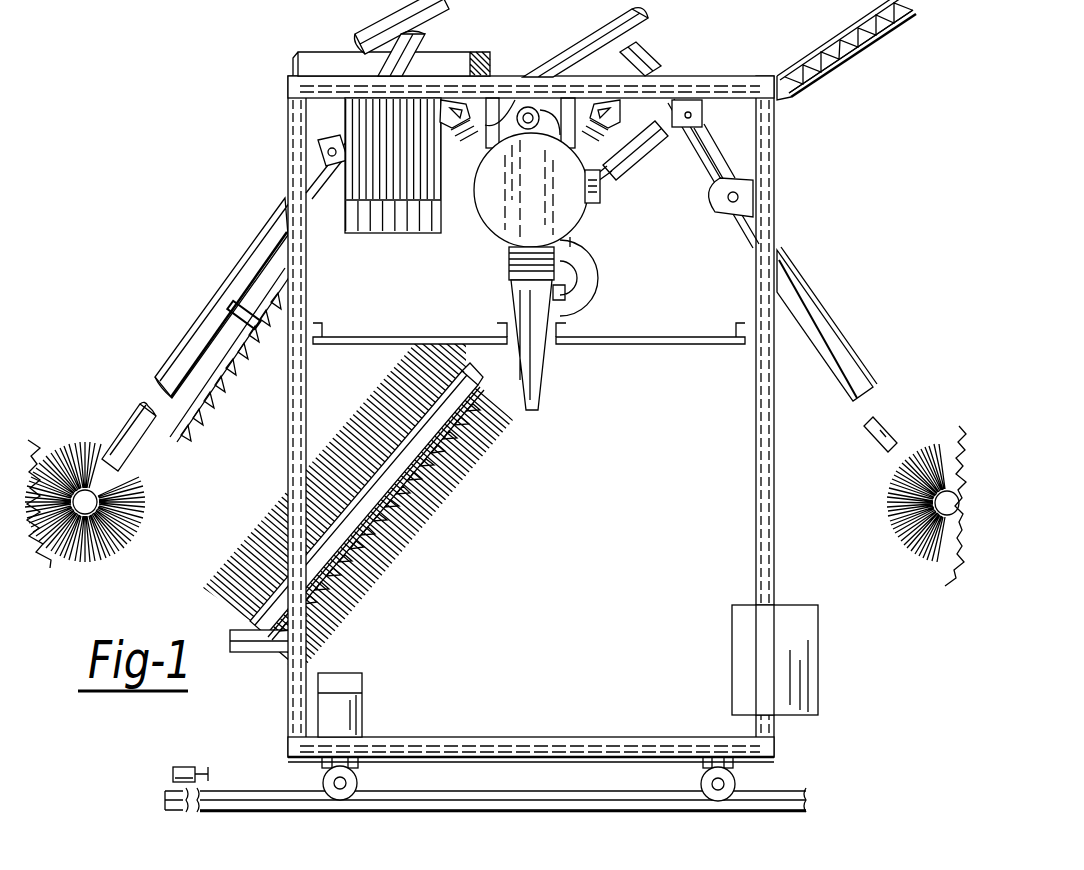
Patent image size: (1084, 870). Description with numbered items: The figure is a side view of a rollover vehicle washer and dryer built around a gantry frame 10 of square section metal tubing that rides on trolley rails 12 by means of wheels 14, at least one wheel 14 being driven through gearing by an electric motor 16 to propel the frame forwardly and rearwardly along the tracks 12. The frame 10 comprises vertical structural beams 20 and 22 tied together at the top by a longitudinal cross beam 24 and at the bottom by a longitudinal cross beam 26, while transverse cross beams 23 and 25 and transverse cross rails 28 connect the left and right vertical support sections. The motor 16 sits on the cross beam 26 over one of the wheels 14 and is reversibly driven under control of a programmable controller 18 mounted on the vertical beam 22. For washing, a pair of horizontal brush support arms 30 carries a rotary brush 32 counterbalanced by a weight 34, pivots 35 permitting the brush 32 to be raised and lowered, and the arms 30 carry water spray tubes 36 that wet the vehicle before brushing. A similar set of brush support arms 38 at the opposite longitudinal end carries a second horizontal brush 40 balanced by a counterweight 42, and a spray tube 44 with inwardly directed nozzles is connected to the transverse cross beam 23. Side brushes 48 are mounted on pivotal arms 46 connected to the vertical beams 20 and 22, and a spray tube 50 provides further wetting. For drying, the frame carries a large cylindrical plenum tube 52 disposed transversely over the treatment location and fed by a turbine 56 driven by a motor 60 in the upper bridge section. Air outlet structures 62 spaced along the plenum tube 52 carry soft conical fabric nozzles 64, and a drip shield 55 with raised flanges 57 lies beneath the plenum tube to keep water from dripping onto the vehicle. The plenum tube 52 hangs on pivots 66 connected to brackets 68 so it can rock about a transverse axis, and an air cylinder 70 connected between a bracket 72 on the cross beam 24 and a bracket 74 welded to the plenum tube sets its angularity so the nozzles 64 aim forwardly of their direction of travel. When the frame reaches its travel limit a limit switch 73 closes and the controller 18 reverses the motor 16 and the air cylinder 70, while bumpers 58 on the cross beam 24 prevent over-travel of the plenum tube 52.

The gantry frame 10 is at (572, 382).
The trolley rails 12 is at (778, 790).
The wheels 14 is at (357, 782).
The electric motor 16 is at (350, 713).
The programmable controller 18 is at (730, 650).
The vertical structural beam 20 is at (302, 307).
The vertical structural beam 22 is at (757, 478).
The transverse cross beam 23 is at (846, 50).
The longitudinal cross beam 24 is at (598, 80).
The transverse cross beam 25 is at (377, 35).
The longitudinal cross beam 26 is at (577, 737).
The transverse cross rails 28 is at (650, 20).
The horizontal brush support arms 30 is at (247, 262).
The rotary brush 32 is at (83, 432).
The weight 34 is at (417, 37).
The pivots 35 is at (318, 143).
The water spray tubes 36 is at (247, 353).
The brush support arms 38 is at (812, 308).
The horizontal brush 40 is at (877, 512).
The counterweight 42 is at (645, 58).
The spray tube 44 is at (863, 37).
The pivotal arms 46 is at (468, 373).
The side brushes 48 is at (453, 480).
The spray tube 50 is at (393, 553).
The plenum tube 52 is at (492, 208).
The drip shield 55 is at (370, 337).
The turbine 56 is at (470, 57).
The raised flanges 57 is at (323, 333).
The bumpers 58 is at (470, 127).
The motor 60 is at (401, 233).
The air outlet structures 62 is at (508, 262).
The conical nozzles 64 is at (533, 368).
The pivots 66 is at (530, 108).
The brackets 68 is at (550, 127).
The air cylinder 70 is at (643, 167).
The bracket 72 is at (695, 117).
The limit switch 73 is at (183, 767).
The bracket 74 is at (592, 205).